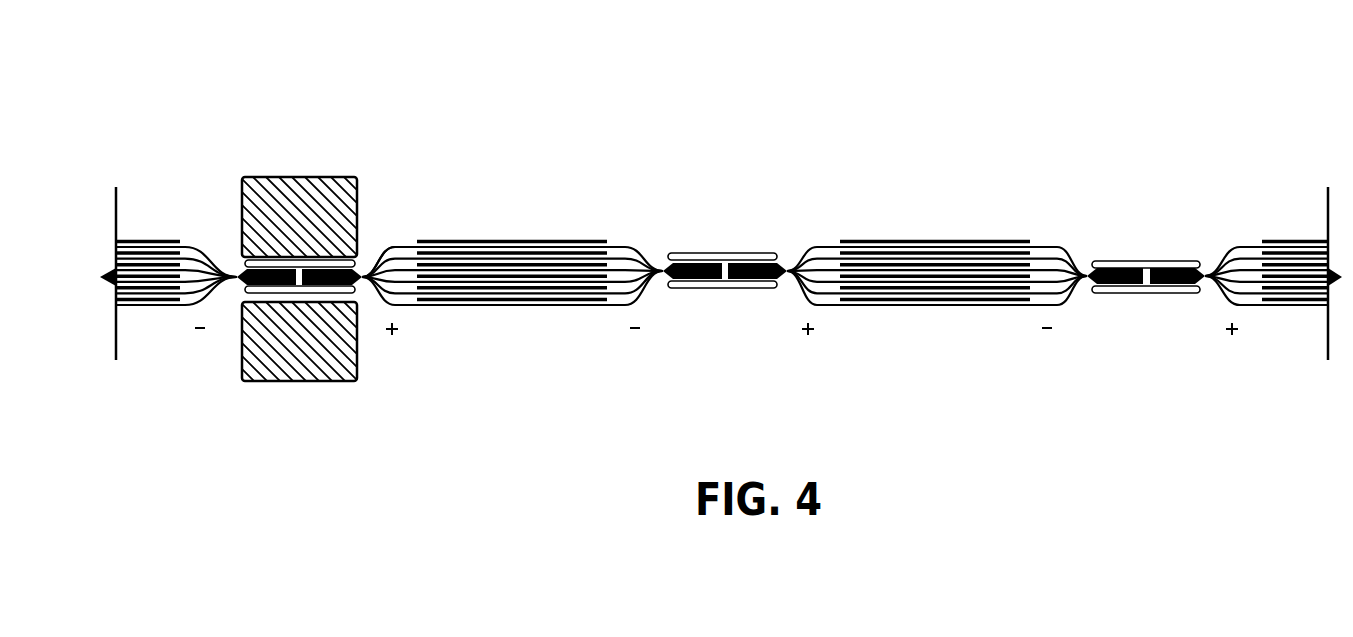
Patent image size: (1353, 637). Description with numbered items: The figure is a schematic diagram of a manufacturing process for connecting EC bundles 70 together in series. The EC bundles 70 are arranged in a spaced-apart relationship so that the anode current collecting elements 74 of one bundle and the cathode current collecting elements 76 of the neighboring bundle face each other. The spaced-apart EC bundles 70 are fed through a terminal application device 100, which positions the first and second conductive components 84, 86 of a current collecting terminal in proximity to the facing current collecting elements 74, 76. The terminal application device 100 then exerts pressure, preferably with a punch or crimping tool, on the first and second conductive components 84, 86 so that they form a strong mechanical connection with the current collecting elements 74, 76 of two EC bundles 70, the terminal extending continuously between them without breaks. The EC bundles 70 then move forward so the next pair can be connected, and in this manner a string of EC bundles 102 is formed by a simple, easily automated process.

The EC bundle 70 is at (157, 365).
The anode current collecting element 74 is at (192, 247).
The cathode current collecting element 76 is at (392, 247).
The first conductive component 84 is at (340, 293).
The second conductive component 86 is at (338, 260).
The terminal application device 100 is at (303, 177).
The string of EC bundles 102 is at (780, 95).